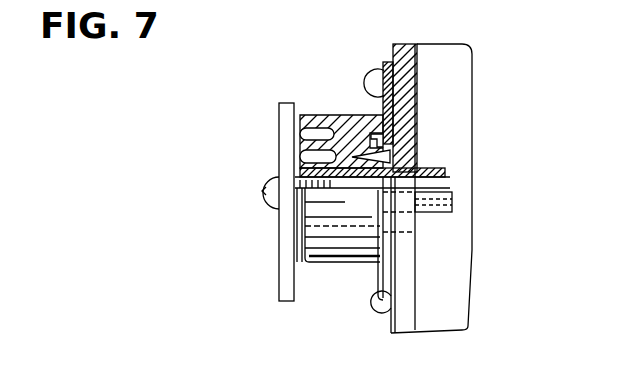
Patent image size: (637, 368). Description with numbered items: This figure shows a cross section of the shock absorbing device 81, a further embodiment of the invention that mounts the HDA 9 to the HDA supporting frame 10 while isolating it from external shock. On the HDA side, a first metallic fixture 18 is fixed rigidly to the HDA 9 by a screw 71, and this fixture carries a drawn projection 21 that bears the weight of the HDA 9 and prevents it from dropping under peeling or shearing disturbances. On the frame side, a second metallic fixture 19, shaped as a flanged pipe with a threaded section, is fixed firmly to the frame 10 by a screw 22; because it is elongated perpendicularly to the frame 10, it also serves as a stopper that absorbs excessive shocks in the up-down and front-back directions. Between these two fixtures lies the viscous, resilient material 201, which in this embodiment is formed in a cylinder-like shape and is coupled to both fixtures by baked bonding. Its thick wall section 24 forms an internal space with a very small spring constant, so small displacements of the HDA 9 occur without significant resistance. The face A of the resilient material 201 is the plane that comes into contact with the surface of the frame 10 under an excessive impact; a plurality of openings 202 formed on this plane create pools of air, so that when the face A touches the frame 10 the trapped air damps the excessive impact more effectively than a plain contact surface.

The HDA 9 is at (460, 310).
The first metallic fixture 18 is at (390, 108).
The screw 71 is at (378, 70).
The viscous, resilient material 201 is at (334, 130).
The openings 202 is at (320, 132).
The upper surface (A-face) A is at (305, 125).
The drawn projection 21 is at (372, 142).
The thick wall section 24 is at (355, 157).
The second metallic fixture 19 is at (450, 177).
The shock absorbing device 81 is at (340, 266).
The screw 22 is at (265, 212).
The HDA supporting frame 10 is at (286, 304).